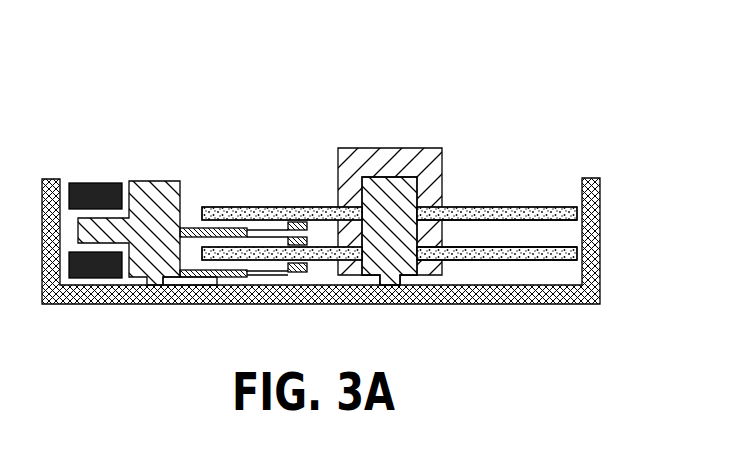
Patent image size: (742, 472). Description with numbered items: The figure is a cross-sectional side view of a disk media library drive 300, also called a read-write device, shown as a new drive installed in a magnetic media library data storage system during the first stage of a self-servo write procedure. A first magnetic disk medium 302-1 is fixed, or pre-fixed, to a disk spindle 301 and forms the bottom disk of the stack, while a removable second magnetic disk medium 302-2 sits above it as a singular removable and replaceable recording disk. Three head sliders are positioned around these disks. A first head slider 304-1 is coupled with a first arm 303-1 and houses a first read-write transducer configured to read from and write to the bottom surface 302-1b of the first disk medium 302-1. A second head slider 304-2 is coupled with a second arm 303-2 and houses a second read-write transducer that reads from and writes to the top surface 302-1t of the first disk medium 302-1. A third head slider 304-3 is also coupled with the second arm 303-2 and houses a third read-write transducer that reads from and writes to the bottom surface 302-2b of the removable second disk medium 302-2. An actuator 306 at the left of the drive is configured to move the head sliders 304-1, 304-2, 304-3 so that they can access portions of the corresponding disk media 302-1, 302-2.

The disk media library drive 300 is at (110, 60).
The disk spindle 301 is at (385, 190).
The first magnetic disk medium 302-1 is at (560, 260).
The top surface of the first disk medium 302-1t is at (556, 241).
The bottom surface of the first disk medium 302-1b is at (499, 264).
The removable second magnetic disk medium 302-2 is at (543, 207).
The bottom surface of the second disk medium 302-2b is at (462, 224).
The first arm 303-1 is at (218, 277).
The second arm 303-2 is at (193, 228).
The first head slider 304-1 is at (298, 272).
The second head slider 304-2 is at (290, 238).
The third head slider 304-3 is at (297, 222).
The actuator 306 is at (150, 182).